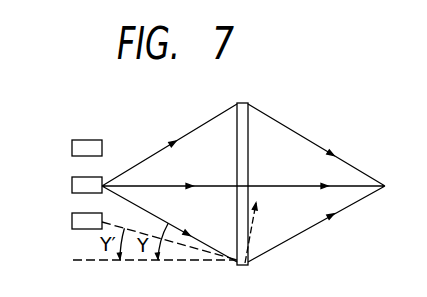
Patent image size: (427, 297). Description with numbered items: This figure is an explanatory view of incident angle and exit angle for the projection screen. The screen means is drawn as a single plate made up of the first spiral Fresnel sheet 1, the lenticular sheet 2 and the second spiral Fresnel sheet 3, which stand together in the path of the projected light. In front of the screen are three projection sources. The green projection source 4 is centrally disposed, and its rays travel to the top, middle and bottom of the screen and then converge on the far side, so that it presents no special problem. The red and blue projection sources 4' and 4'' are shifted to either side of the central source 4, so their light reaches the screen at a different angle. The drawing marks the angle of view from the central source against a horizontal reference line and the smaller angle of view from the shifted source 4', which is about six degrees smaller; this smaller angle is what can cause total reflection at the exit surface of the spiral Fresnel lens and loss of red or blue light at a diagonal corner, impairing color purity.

The first spiral Fresnel sheet 1 is at (269, 170).
The lenticular sheet 2 is at (269, 170).
The second spiral Fresnel sheet 3 is at (244, 103).
The projection source 4 is at (65, 187).
The projection source 4' is at (65, 222).
The projection source 4'' is at (65, 149).